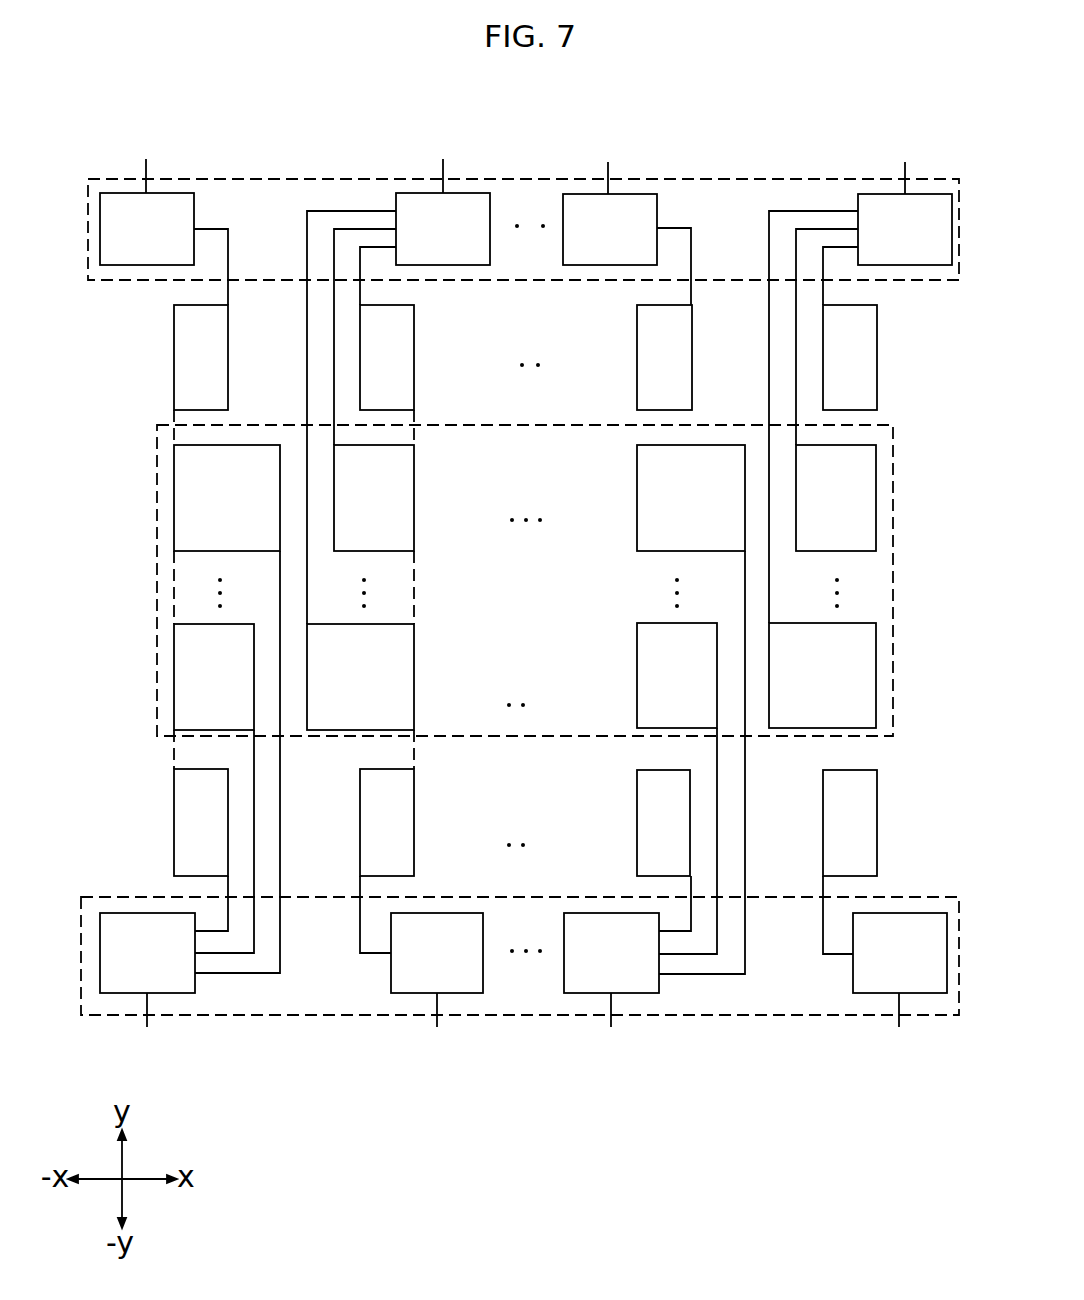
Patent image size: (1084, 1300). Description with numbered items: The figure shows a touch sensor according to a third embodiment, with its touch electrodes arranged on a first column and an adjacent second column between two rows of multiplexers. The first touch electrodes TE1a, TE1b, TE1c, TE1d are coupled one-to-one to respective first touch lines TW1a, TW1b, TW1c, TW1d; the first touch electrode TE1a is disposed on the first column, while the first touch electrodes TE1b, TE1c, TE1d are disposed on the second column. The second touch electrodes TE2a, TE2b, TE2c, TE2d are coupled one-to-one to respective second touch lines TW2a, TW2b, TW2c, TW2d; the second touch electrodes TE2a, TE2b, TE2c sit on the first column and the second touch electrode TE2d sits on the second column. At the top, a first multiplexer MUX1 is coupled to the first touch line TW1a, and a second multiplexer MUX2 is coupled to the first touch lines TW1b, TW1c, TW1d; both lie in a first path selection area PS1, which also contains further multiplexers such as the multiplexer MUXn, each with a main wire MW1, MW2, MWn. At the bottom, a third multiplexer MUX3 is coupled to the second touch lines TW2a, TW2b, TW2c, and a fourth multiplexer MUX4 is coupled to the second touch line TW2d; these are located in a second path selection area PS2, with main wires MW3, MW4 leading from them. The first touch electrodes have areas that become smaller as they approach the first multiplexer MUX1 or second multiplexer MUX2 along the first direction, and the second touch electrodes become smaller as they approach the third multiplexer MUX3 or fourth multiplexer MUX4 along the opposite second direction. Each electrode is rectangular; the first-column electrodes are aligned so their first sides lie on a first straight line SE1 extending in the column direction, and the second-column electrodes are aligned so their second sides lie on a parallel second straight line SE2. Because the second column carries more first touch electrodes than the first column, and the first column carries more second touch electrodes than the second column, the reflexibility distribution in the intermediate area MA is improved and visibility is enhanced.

The first path selection area PS1 is at (700, 179).
The second path selection area PS2 is at (747, 1017).
The intermediate area MA is at (157, 652).
The first straight line SE1 is at (173, 600).
The second straight line SE2 is at (413, 600).
The first multiplexer MUX1 is at (170, 239).
The second multiplexer MUX2 is at (465, 239).
The third multiplexer MUX3 is at (173, 967).
The fourth multiplexer MUX4 is at (462, 967).
The nth multiplexer MUXn is at (922, 967).
The first main wire MW1 is at (153, 161).
The second main wire MW2 is at (448, 161).
The third main wire MW3 is at (148, 1027).
The fourth main wire MW4 is at (438, 1027).
The nth main wire MWn is at (901, 1027).
The first touch line TW1a is at (205, 229).
The first touch line TW1b is at (382, 247).
The first touch line TW1c is at (358, 229).
The first touch line TW1d is at (332, 211).
The second touch line TW2a is at (203, 931).
The second touch line TW2b is at (232, 953).
The second touch line TW2c is at (253, 973).
The second touch line TW2d is at (378, 960).
The first touch electrode TE1a is at (224, 373).
The first touch electrode TE1b is at (409, 373).
The first touch electrode TE1c is at (393, 507).
The first touch electrode TE1d is at (378, 692).
The second touch electrode TE2a is at (223, 837).
The second touch electrode TE2b is at (235, 692).
The second touch electrode TE2c is at (251, 507).
The second touch electrode TE2d is at (409, 837).